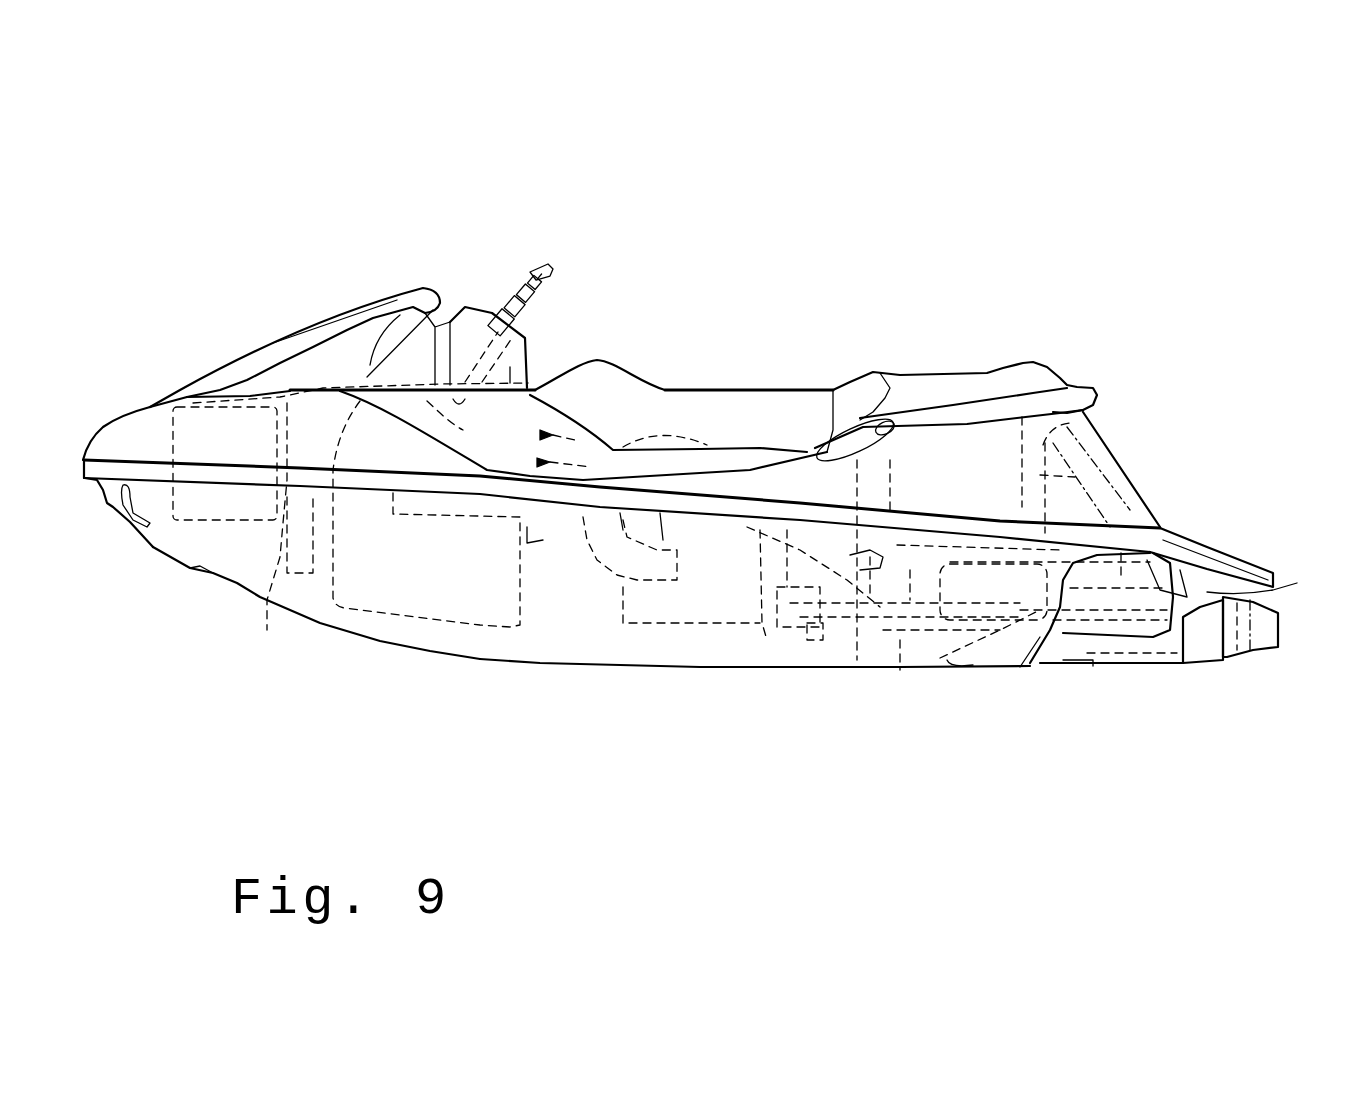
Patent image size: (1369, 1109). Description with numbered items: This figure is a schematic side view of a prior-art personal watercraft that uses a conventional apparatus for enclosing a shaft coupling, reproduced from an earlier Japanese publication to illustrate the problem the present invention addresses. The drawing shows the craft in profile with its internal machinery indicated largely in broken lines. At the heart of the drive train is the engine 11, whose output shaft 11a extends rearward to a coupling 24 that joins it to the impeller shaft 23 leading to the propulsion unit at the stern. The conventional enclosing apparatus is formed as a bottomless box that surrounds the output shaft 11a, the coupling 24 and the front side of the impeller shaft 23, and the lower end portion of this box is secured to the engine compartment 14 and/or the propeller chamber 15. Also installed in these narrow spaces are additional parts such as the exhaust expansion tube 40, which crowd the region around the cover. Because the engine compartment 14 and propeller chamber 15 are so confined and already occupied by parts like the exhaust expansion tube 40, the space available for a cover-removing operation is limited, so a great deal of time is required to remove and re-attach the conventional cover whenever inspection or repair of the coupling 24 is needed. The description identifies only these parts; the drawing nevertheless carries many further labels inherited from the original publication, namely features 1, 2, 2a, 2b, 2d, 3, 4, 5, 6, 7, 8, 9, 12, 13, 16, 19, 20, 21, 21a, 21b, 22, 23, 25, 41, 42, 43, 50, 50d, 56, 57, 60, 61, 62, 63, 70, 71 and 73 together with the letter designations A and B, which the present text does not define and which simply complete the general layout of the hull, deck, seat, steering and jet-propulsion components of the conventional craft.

The personal watercraft 1 is at (1101, 255).
The hull 2 is at (537, 673).
The hull bottom portion 2a is at (760, 672).
The hull rear portion 2b is at (1271, 575).
The hull step 2d is at (150, 547).
The hull bottom 3 is at (413, 657).
The deck 4 is at (1133, 450).
The bow 5 is at (128, 457).
The deck upper surface 6 is at (787, 391).
The seat cushion 7 is at (987, 372).
The steering handle 8 is at (530, 263).
The eye 9 is at (113, 505).
The engine 11 is at (690, 630).
The output shaft 11a is at (765, 650).
The engine compartment 12 is at (523, 597).
The bulkhead 13 is at (550, 542).
The engine compartment 14 is at (813, 643).
The propeller chamber 15 is at (880, 613).
The pump housing inlet 16 is at (887, 613).
The steering nozzle 19 is at (1270, 603).
The jet nozzle 20 is at (1205, 672).
The water jet pump 21 is at (925, 587).
The pump inlet 21a is at (972, 660).
The nozzle outlet 21b is at (1265, 655).
The ride plate 22 is at (1160, 672).
The impeller shaft 23 is at (1113, 672).
The coupling 24 is at (830, 668).
The steering cable 25 is at (593, 443).
The exhaust expansion tube 40 is at (700, 437).
The hood 41 is at (583, 435).
The rear deck 42 is at (1130, 480).
The grab rail 43 is at (1230, 547).
The seat 50 is at (1080, 378).
The seat hinge 50d is at (835, 390).
The seat base 56 is at (880, 373).
The seat latch 57 is at (1027, 443).
The steering shaft 60 is at (542, 348).
The steering column 61 is at (383, 287).
The steering housing 62 is at (467, 305).
The storage compartment 63 is at (282, 531).
The front storage box 70 is at (230, 523).
The windshield 71 is at (287, 318).
The windshield base 73 is at (213, 370).
The direction A is at (755, 391).
The baseline B is at (570, 667).